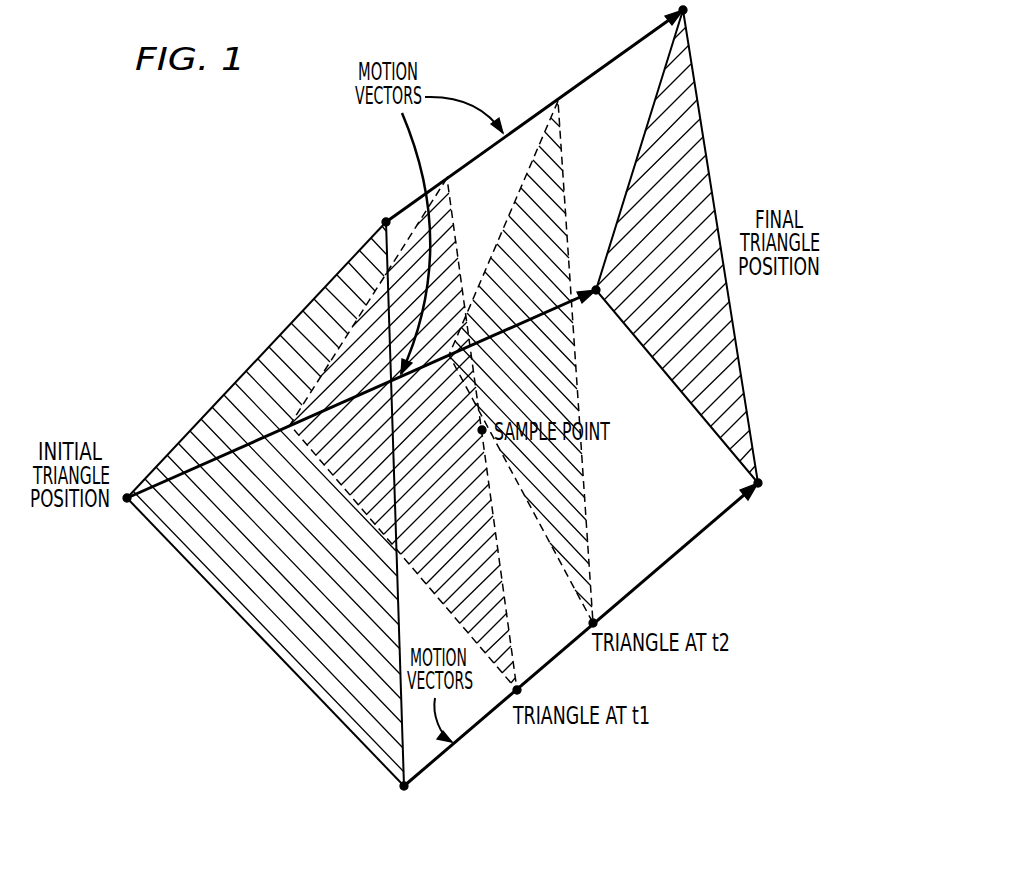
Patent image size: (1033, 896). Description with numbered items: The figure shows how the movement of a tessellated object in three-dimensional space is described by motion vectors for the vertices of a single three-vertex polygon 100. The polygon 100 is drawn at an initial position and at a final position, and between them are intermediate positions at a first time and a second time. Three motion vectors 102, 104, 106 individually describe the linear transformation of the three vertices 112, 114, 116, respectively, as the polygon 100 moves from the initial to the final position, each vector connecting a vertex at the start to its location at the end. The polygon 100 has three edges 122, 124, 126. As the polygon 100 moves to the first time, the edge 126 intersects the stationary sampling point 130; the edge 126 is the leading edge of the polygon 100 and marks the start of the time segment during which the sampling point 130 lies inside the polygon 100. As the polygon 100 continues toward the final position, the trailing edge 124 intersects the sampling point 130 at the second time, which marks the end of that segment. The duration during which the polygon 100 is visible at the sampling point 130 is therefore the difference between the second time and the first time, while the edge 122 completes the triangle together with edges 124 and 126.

The three-vertex polygon 100 is at (690, 130).
The motion vector 102 is at (617, 55).
The motion vector 104 is at (596, 288).
The motion vector 106 is at (672, 552).
The vertex 112 is at (386, 222).
The vertex 114 is at (127, 500).
The vertex 116 is at (403, 788).
The edge 122 is at (183, 430).
The trailing edge 124 is at (238, 647).
The leading edge 126 is at (412, 745).
The sampling point 130 is at (480, 437).